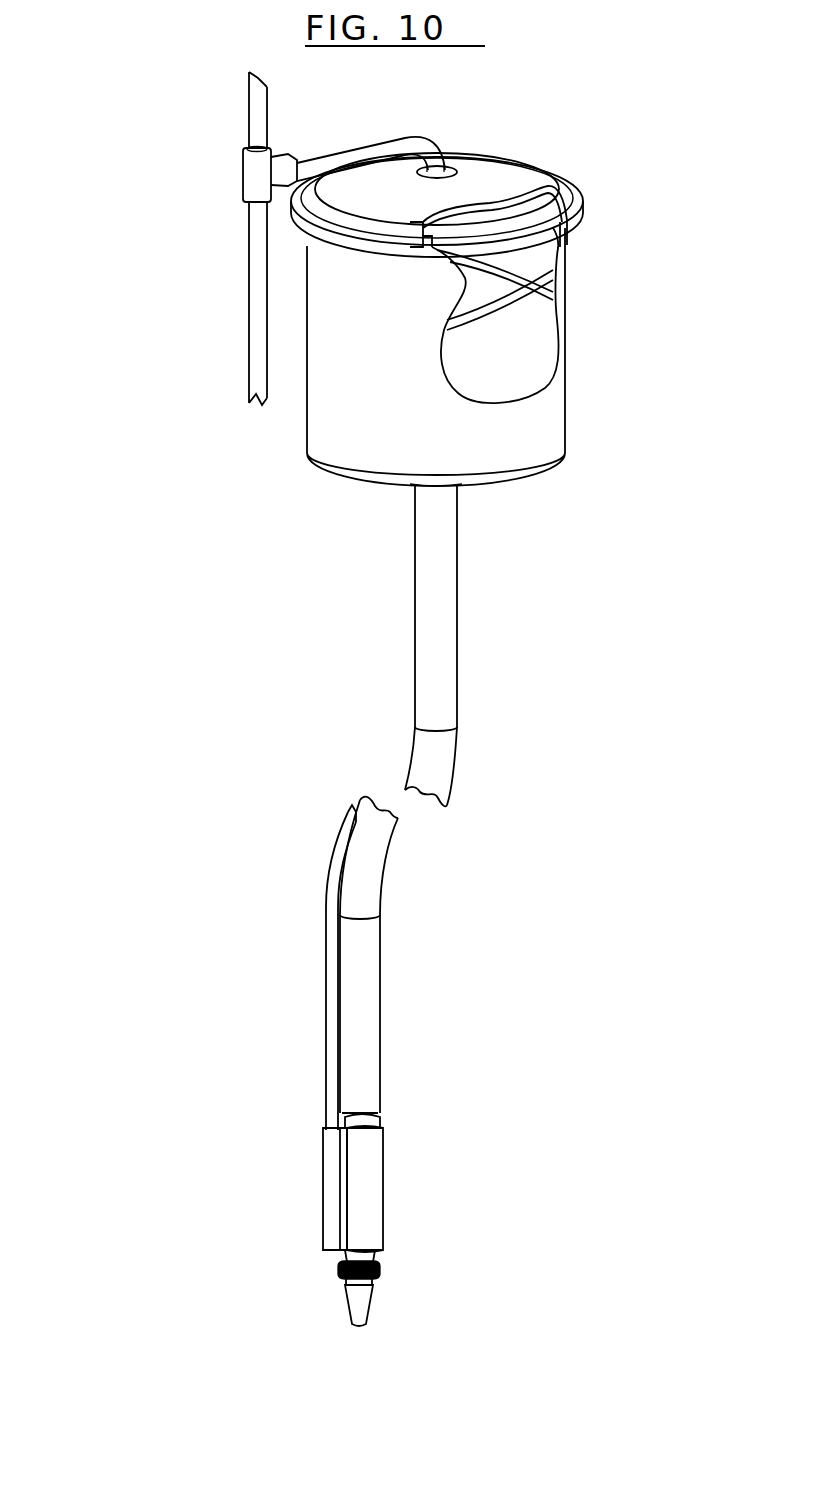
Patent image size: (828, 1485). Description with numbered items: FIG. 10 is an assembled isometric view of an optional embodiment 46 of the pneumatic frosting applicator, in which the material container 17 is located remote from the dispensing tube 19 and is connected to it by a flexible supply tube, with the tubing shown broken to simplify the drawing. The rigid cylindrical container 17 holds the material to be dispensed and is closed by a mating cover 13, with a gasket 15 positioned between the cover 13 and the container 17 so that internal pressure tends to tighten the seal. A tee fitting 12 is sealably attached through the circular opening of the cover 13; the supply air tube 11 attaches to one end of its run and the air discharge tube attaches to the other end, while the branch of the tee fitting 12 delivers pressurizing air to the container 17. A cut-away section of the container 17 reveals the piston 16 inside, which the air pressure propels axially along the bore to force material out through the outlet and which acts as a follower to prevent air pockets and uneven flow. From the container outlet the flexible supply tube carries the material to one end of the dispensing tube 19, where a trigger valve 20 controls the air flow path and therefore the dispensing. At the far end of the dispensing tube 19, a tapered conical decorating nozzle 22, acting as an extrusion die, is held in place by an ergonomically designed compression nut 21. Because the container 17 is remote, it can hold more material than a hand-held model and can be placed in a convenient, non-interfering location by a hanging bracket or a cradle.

The supply air tube 11 is at (247, 115).
The tee fitting 12 is at (243, 178).
The cover 13 is at (553, 170).
The gasket 15 is at (562, 229).
The piston 16 is at (552, 313).
The container 17 is at (562, 420).
The dispensing tube 19 is at (385, 1143).
The trigger valve 20 is at (322, 1182).
The compression nut 21 is at (380, 1270).
The nozzle 22 is at (345, 1302).
The optional embodiment 46 is at (572, 508).